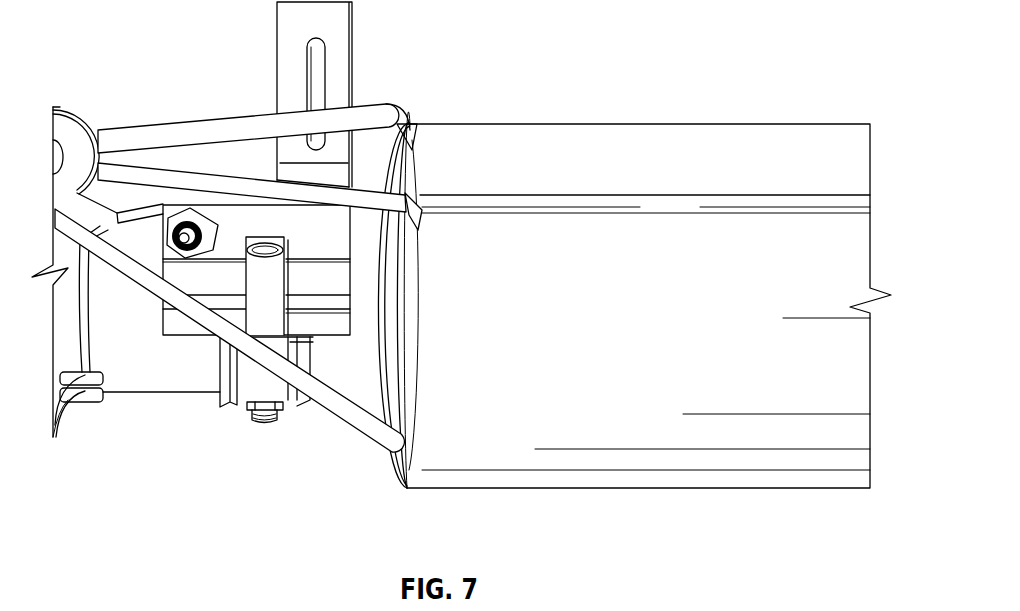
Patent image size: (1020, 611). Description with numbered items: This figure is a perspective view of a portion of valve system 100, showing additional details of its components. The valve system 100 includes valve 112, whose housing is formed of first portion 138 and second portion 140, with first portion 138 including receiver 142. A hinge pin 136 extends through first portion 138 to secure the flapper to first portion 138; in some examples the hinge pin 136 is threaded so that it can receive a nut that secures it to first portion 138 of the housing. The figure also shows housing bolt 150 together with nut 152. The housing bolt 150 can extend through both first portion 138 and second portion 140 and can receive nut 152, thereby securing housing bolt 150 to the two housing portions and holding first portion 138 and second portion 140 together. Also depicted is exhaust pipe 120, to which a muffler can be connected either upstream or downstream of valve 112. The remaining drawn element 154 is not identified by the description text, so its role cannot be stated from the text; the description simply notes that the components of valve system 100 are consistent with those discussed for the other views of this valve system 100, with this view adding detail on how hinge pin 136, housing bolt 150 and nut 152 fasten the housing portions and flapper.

The valve system 100 is at (621, 112).
The valve 112 is at (146, 38).
The exhaust pipe 120 is at (156, 416).
The hinge pin 136 is at (183, 243).
The first portion 138 is at (233, 218).
The second portion 140 is at (243, 392).
The receiver 142 is at (342, 38).
The housing bolt 150 is at (266, 247).
The nut 152 is at (282, 405).
The inner surface 154 is at (605, 460).